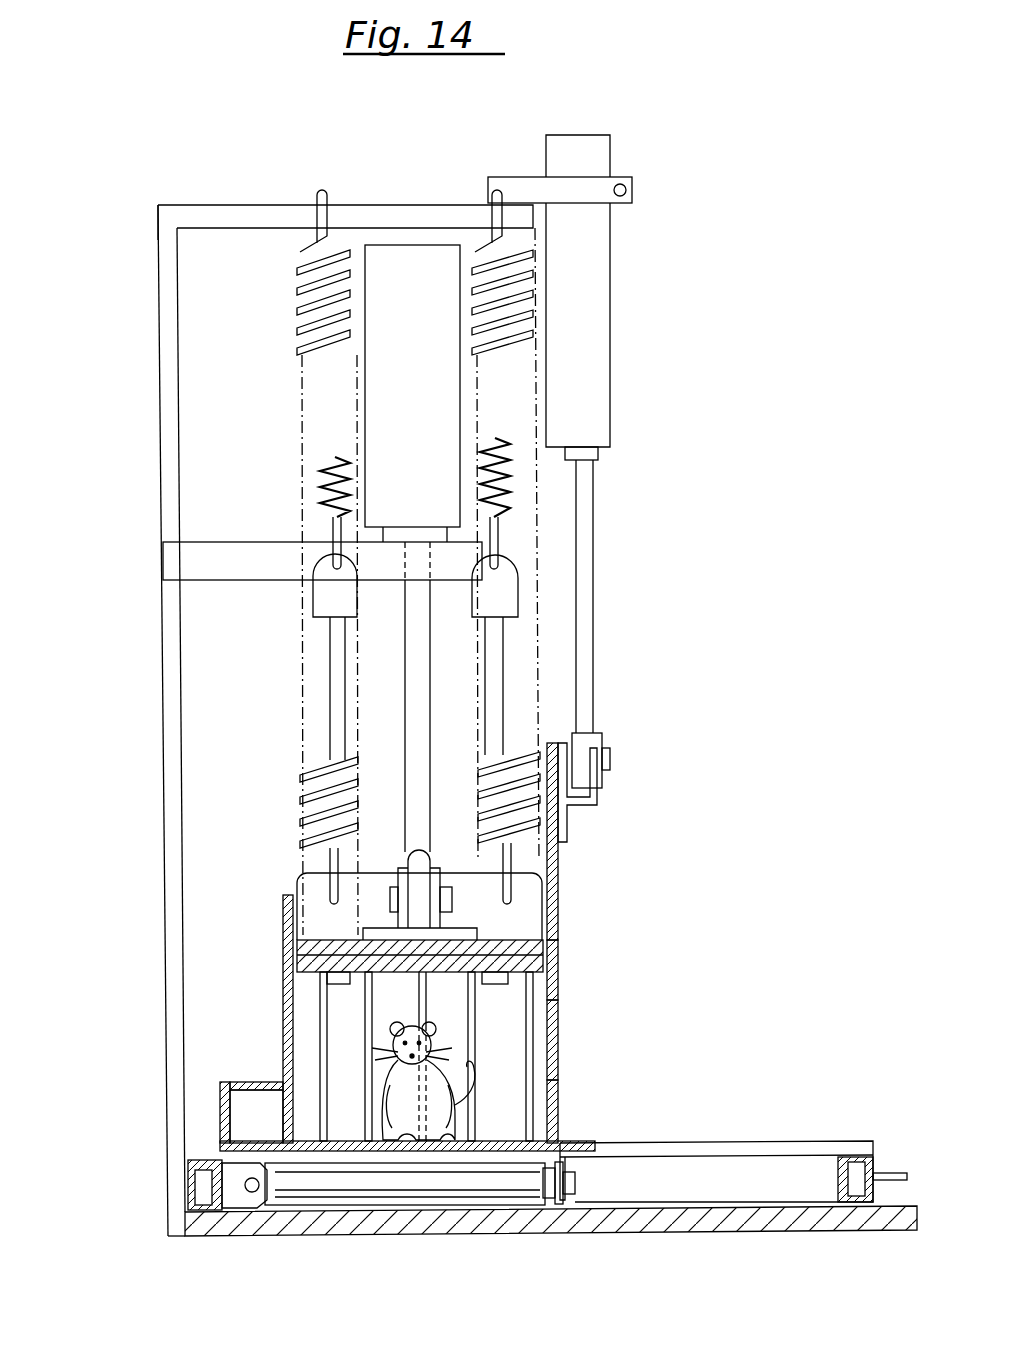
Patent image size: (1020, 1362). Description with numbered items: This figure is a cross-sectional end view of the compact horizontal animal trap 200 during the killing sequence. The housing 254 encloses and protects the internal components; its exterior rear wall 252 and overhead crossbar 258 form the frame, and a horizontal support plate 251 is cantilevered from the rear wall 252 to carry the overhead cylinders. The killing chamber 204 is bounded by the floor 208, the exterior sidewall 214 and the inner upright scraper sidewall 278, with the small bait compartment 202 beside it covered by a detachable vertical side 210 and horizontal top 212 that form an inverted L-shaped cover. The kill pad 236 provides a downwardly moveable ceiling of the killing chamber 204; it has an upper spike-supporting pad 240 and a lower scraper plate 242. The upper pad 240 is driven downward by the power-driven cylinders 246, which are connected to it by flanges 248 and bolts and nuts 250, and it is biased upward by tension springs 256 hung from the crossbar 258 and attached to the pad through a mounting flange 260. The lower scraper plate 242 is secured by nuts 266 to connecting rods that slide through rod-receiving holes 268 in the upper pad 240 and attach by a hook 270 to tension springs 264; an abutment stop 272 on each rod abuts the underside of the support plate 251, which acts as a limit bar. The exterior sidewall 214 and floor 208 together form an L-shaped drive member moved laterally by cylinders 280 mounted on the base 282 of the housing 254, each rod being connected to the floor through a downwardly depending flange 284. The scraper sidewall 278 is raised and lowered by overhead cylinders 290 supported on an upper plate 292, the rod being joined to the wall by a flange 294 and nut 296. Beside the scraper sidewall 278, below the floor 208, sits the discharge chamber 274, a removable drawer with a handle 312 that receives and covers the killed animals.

The compact horizontal animal trap 200 is at (665, 877).
The bait compartment 202 is at (220, 1082).
The killing chamber 204 is at (565, 1103).
The floor of the killing chamber 208 is at (593, 1142).
The vertical side of the bait compartment 210 is at (220, 1115).
The horizontal top of the bait compartment 212 is at (254, 1082).
The exterior sidewall 214 is at (297, 910).
The kill pad 236 is at (482, 1023).
The upper pad 240 is at (548, 948).
The lower scraper plate 242 is at (552, 988).
The power-driven cylinders 246 is at (418, 245).
The flanges 248 is at (483, 936).
The bolts and nuts 250 is at (398, 894).
The horizontal support plate 251 is at (244, 542).
The exterior wall of the housing 252 is at (158, 665).
The housing 254 is at (158, 205).
The tension springs 256 is at (297, 284).
The overhead crossbar 258 is at (265, 203).
The mounting flange 260 is at (544, 887).
The tension springs 264 is at (320, 463).
The nuts 266 is at (327, 984).
The rod-receiving holes 268 is at (297, 962).
The hook 270 is at (332, 872).
The abutment stop 272 is at (313, 612).
The discharge chamber 274 is at (802, 1157).
The scraper sidewall 278 is at (560, 1060).
The cylinders 280 is at (547, 1202).
The base 282 is at (720, 1231).
The downwardly depending flange 284 is at (256, 1197).
The cylinders 290 is at (612, 404).
The upper plate 292 is at (505, 177).
The flange 294 is at (595, 803).
The nut 296 is at (610, 758).
The handle 312 is at (880, 1173).